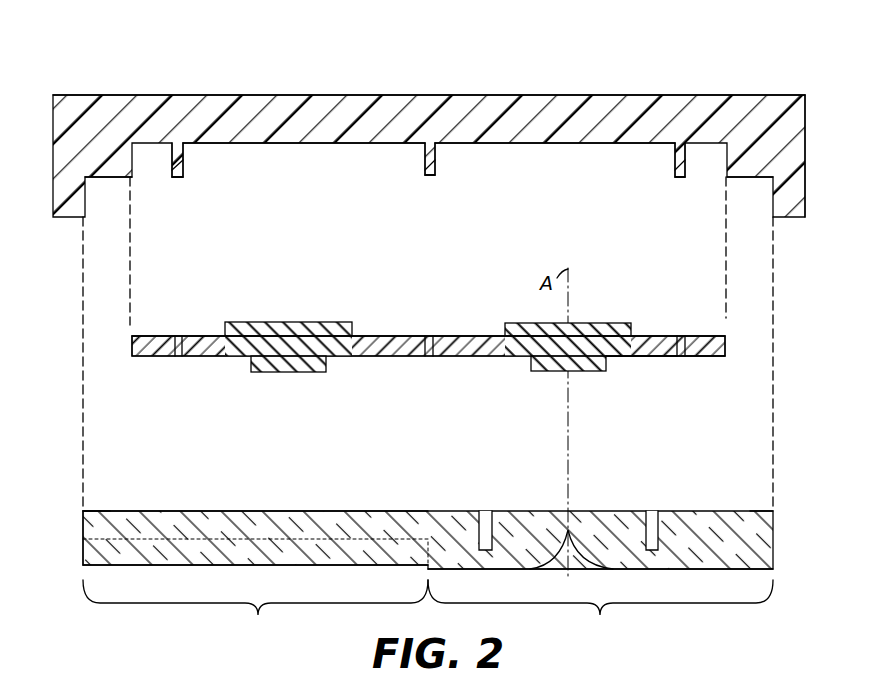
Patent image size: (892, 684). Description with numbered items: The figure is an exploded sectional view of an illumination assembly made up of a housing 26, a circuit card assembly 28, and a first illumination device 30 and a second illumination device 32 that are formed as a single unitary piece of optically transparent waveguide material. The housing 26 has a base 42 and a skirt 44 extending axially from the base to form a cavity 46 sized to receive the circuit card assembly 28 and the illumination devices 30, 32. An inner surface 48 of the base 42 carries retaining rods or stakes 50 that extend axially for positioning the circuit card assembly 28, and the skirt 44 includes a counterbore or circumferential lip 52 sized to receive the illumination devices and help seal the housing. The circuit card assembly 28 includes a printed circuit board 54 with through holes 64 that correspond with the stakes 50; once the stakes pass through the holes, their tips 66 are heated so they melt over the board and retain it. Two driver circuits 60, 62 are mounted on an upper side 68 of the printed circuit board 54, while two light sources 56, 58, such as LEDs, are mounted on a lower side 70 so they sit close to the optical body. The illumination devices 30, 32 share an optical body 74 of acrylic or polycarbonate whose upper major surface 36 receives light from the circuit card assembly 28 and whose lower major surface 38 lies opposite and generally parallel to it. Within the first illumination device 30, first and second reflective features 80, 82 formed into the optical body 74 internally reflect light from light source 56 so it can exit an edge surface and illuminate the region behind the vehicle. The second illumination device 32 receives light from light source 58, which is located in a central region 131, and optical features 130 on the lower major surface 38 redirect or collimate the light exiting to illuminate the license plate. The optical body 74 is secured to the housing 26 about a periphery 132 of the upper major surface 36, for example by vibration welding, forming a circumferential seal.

The housing 26 is at (753, 95).
The circuit card assembly 28 is at (744, 344).
The first illumination device 30 is at (600, 613).
The second illumination device 32 is at (255, 613).
The upper major surface 36 is at (523, 511).
The lower major surface 38 is at (466, 571).
The base 42 is at (540, 95).
The skirt 44 is at (806, 128).
The cavity 46 is at (497, 146).
The inner surface 48 is at (459, 145).
The retaining rods or stakes 50 is at (184, 164).
The counterbore or circumferential lip 52 is at (108, 178).
The printed circuit board 54 is at (395, 336).
The light source 56 is at (570, 372).
The light source 58 is at (282, 373).
The driver circuit 60 is at (568, 323).
The driver circuit 62 is at (277, 322).
The through holes 64 is at (178, 357).
The tips 66 is at (178, 179).
The upper side 68 is at (658, 336).
The lower side 70 is at (642, 357).
The optical body 74 is at (81, 522).
The first reflective feature 80 is at (548, 560).
The second reflective feature 82 is at (483, 511).
The optical features 130 is at (182, 567).
The central region 131 is at (275, 509).
The periphery 132 is at (95, 511).